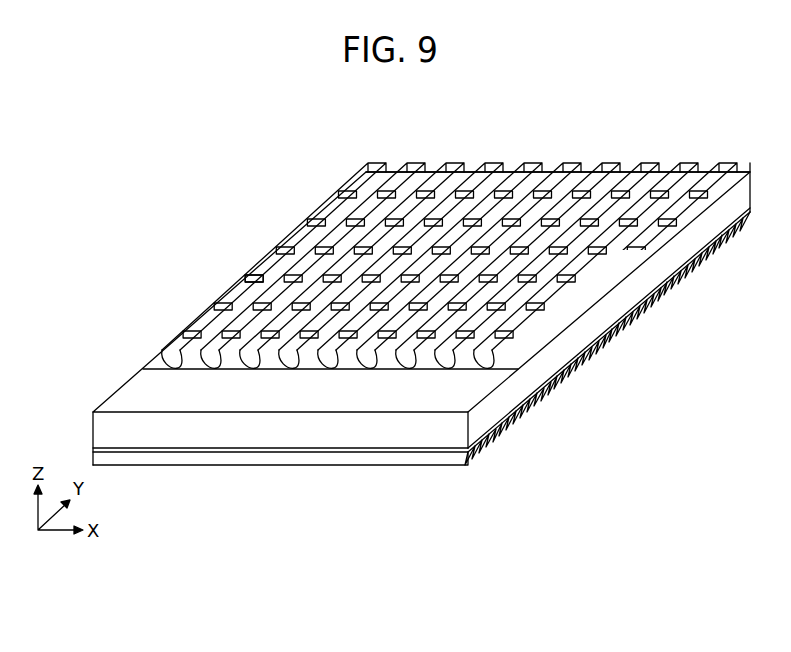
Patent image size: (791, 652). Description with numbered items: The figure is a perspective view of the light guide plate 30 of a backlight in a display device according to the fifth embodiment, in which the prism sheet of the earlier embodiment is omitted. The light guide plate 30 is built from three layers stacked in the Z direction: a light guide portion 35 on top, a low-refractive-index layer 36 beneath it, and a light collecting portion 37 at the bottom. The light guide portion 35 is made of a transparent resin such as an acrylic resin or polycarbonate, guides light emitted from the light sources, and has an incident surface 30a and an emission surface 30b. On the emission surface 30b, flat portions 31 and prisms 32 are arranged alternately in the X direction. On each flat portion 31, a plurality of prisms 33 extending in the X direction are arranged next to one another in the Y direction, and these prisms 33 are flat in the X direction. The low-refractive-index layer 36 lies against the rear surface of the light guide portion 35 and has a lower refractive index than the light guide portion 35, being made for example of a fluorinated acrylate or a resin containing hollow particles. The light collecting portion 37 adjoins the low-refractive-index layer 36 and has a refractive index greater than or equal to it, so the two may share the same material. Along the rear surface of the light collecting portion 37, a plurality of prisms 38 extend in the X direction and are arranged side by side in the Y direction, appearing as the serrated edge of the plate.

The light guide plate 30 is at (572, 128).
The incident surface 30a is at (193, 432).
The emission surface 30b is at (253, 268).
The flat portion 31 is at (168, 343).
The prism 32 is at (167, 356).
The prism 33 is at (210, 315).
The light guide portion 35 is at (347, 432).
The low-refractive-index layer 36 is at (390, 453).
The light collecting portion 37 is at (435, 460).
The prism 38 is at (502, 433).